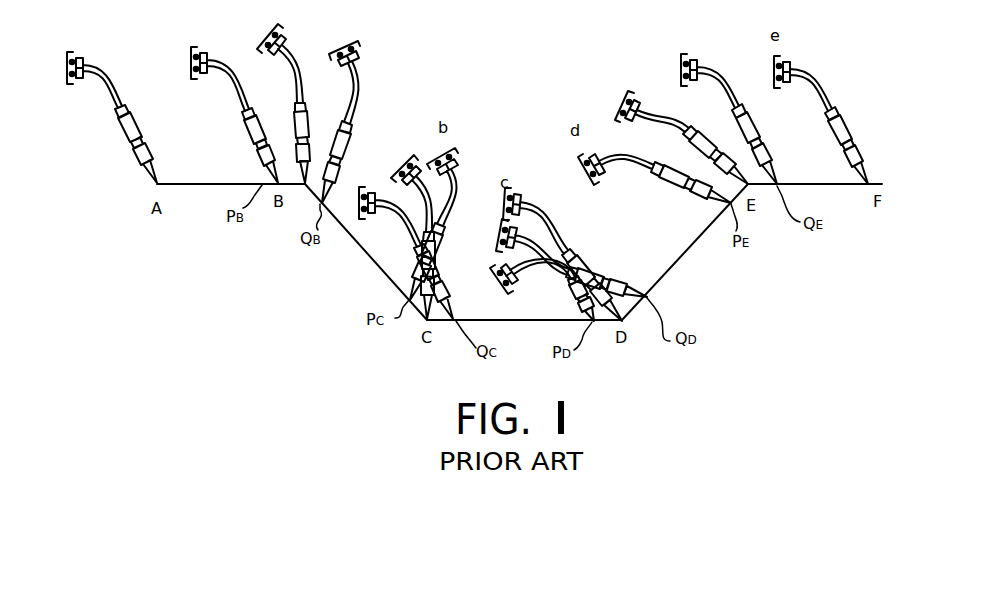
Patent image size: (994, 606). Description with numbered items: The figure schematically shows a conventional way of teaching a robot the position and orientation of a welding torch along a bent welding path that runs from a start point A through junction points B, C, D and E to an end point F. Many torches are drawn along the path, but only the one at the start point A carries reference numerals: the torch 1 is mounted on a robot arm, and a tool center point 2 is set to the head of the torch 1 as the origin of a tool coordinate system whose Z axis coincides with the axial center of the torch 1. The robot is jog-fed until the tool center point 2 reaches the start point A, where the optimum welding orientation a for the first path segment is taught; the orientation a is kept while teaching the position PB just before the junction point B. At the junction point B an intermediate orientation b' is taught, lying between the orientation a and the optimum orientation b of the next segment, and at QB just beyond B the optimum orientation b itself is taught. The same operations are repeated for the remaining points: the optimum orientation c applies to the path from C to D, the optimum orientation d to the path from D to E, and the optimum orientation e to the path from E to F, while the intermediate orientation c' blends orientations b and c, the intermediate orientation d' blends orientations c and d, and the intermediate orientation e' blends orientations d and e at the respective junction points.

The torch 1 is at (120, 133).
The tool center point 2 is at (153, 183).
The optimum welding orientation a is at (222, 106).
The optimum orientation b is at (343, 116).
The intermediate orientation b' is at (276, 99).
The optimum torch orientation at path CD c is at (406, 243).
The intermediate orientation c' is at (413, 228).
The optimum torch orientation at path DE d is at (529, 290).
The intermediate orientation d' is at (551, 258).
The optimum torch orientation at path EF e is at (724, 105).
The intermediate orientation e' is at (673, 128).